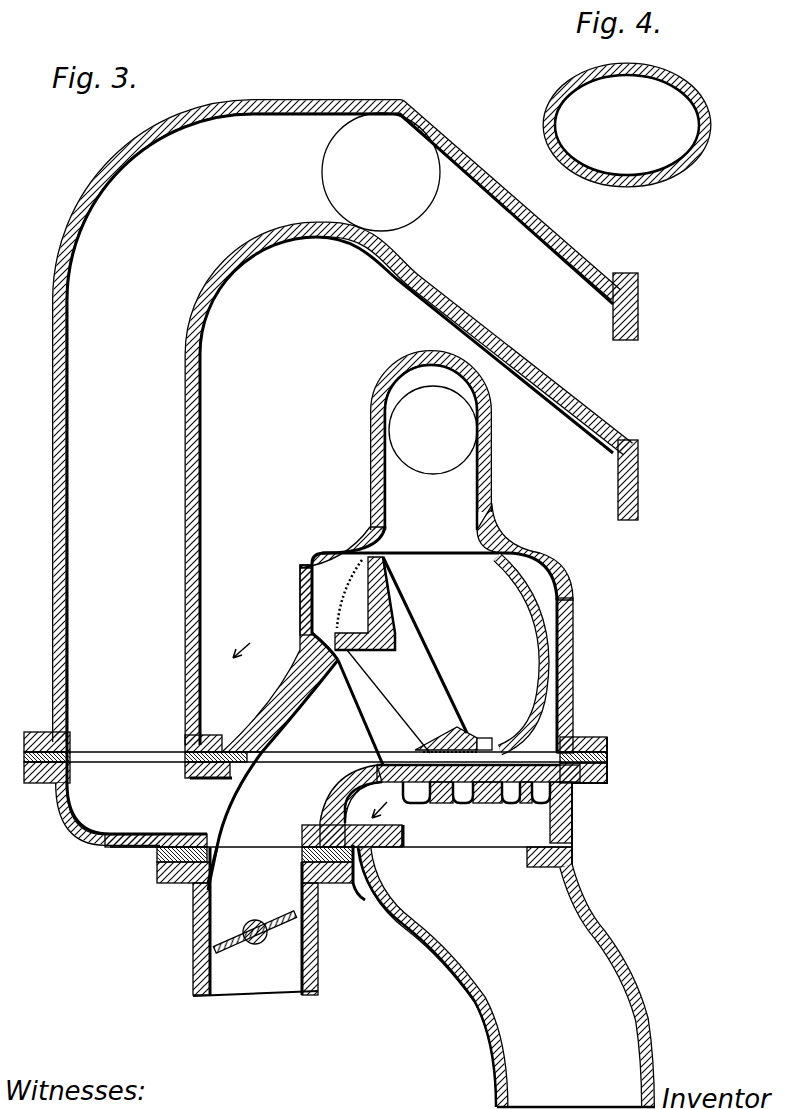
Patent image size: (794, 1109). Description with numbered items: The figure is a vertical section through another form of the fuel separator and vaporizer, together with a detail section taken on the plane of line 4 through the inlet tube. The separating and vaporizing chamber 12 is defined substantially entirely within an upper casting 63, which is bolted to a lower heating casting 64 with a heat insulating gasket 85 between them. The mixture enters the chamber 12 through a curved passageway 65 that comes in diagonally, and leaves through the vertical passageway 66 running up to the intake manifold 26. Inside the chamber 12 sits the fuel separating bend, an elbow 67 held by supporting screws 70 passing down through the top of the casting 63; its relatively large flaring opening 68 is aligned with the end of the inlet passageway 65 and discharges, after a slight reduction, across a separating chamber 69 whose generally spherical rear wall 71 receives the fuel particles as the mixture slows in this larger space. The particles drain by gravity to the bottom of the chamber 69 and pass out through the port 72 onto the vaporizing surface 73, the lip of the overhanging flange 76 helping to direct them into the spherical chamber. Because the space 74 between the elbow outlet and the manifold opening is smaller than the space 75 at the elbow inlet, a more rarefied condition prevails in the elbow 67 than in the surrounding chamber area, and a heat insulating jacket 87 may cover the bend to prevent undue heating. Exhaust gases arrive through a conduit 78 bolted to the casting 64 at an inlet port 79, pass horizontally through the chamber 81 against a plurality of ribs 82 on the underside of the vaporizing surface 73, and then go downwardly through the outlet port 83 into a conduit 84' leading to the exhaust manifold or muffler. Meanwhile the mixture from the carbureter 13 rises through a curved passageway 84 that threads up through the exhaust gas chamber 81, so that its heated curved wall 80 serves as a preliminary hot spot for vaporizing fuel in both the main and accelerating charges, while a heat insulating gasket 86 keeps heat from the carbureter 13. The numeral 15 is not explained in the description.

In FIG. 3, the section line 4 is at (308, 728).
In FIG. 3, the separating and vaporizing chamber 12 is at (327, 598).
In FIG. 3, the carbureter 13 is at (193, 913).
In FIG. 3, the passage 15 is at (384, 725).
In FIG. 3, the intake manifold 26 is at (372, 412).
In FIG. 3, the upper casting 63 is at (300, 644).
In FIG. 3, the lower heating casting 64 is at (72, 820).
In FIG. 3, the curved passageway 65 is at (293, 690).
In FIG. 4, the curved passageway 65 is at (700, 100).
In FIG. 3, the vertical passageway 66 is at (405, 492).
In FIG. 3, the elbow 67 is at (360, 563).
In FIG. 3, the flaring opening 68 is at (320, 637).
In FIG. 3, the separating chamber 69 is at (510, 655).
In FIG. 3, the supporting screws 70 is at (440, 550).
In FIG. 3, the spherical rear wall 71 is at (523, 620).
In FIG. 3, the port 72 is at (483, 738).
In FIG. 3, the vaporizing surface 73 is at (405, 855).
In FIG. 3, the space 74 is at (503, 530).
In FIG. 3, the space 75 is at (351, 806).
In FIG. 3, the overhanging flange 76 is at (362, 634).
In FIG. 3, the conduit 78 is at (53, 597).
In FIG. 3, the inlet port 79 is at (85, 775).
In FIG. 3, the curved wall 80 is at (230, 810).
In FIG. 3, the chamber 81 is at (538, 808).
In FIG. 3, the ribs 82 is at (502, 807).
In FIG. 3, the outlet port 83 is at (383, 882).
In FIG. 3, the curved passageway 84 is at (341, 840).
In FIG. 3, the conduit 84' is at (506, 977).
In FIG. 3, the heat insulating gasket 85 is at (603, 752).
In FIG. 3, the heat insulating gasket 86 is at (160, 857).
In FIG. 3, the heat insulating jacket 87 is at (360, 582).